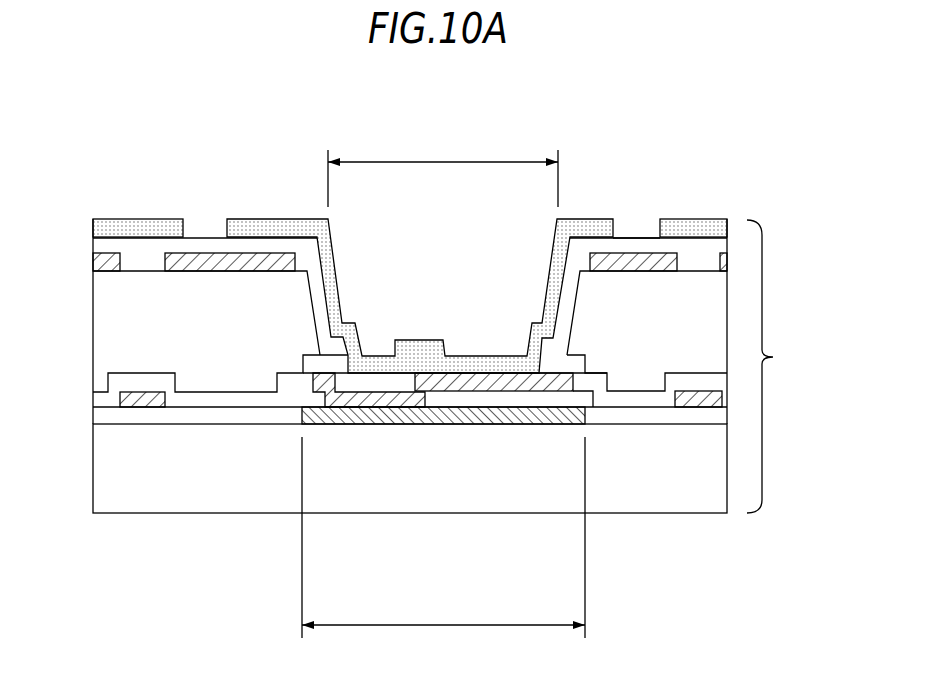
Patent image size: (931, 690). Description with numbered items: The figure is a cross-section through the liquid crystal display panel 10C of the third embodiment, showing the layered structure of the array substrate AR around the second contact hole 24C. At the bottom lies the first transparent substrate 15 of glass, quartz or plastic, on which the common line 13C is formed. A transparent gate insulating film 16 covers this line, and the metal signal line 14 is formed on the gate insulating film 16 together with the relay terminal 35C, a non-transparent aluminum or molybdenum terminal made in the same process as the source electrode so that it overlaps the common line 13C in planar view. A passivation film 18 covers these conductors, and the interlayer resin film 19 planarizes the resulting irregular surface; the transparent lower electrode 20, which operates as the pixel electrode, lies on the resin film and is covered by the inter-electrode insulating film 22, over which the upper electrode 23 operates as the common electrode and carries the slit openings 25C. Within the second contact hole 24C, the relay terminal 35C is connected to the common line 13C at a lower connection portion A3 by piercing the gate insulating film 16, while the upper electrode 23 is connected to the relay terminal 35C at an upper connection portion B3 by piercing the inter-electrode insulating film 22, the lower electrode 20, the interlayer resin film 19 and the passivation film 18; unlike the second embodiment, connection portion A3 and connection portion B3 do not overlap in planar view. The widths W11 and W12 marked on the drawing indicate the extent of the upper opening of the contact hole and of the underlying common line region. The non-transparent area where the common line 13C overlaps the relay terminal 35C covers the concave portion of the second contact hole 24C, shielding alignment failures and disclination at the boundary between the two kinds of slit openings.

The liquid crystal display panel 10C is at (143, 90).
The common line 13C is at (341, 427).
The signal line 14 is at (141, 405).
The first transparent substrate 15 is at (612, 465).
The gate insulating film 16 is at (246, 415).
The passivation film 18 is at (195, 400).
The interlayer resin film 19 is at (187, 341).
The lower electrode 20 is at (208, 262).
The inter-electrode insulating film 22 is at (148, 245).
The upper electrode 23 is at (708, 232).
The second contact hole 24C is at (430, 324).
The slit opening 25C is at (638, 233).
The relay terminal 35C is at (547, 391).
The connection portion A3 is at (334, 410).
The connection portion B3 is at (474, 370).
The width W11 is at (443, 171).
The width W12 is at (443, 537).
The array substrate AR is at (781, 366).